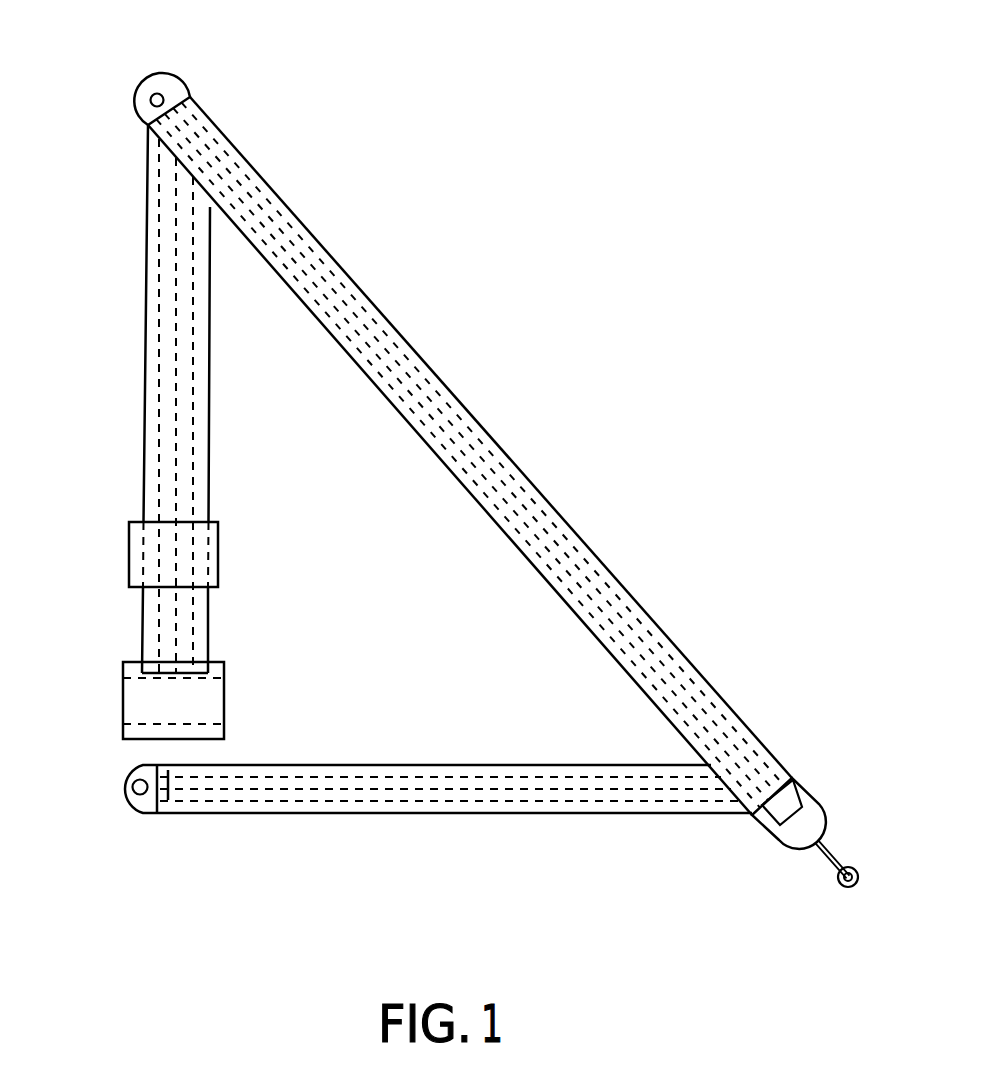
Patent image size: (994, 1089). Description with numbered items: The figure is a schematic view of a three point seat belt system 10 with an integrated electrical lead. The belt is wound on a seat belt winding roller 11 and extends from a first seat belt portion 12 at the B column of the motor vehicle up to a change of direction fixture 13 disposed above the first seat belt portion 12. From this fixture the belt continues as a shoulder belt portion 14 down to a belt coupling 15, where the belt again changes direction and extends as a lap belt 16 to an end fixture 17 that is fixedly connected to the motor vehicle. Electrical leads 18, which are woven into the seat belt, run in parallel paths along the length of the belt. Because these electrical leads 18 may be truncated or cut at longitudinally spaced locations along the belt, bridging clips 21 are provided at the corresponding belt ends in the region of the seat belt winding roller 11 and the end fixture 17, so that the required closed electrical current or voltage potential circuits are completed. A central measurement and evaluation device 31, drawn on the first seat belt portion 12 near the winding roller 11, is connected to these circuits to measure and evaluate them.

The seat belt system 10 is at (595, 401).
The seat belt winding roller 11 is at (128, 699).
The first seat belt portion 12 is at (143, 370).
The change of direction fixture 13 is at (175, 86).
The shoulder belt portion 14 is at (430, 365).
The belt coupling 15 is at (813, 818).
The lap belt 16 is at (577, 813).
The end fixture 17 is at (138, 800).
The electrical leads 18 is at (617, 600).
The bridging clips 21 is at (165, 673).
The central measurement and evaluation device 31 is at (218, 555).